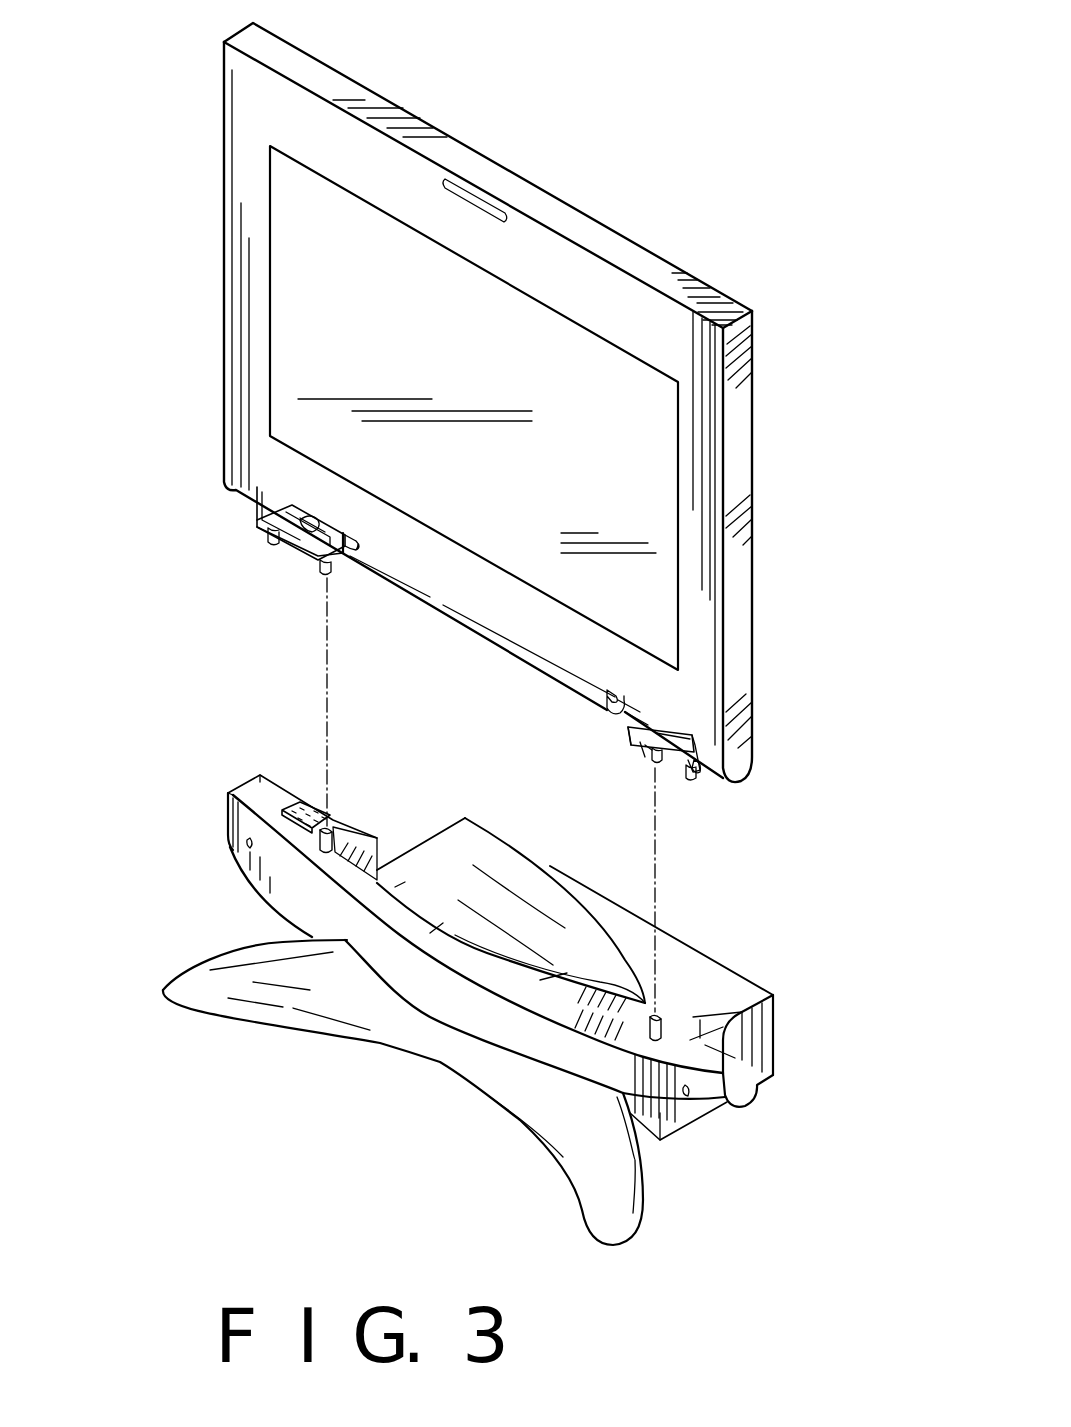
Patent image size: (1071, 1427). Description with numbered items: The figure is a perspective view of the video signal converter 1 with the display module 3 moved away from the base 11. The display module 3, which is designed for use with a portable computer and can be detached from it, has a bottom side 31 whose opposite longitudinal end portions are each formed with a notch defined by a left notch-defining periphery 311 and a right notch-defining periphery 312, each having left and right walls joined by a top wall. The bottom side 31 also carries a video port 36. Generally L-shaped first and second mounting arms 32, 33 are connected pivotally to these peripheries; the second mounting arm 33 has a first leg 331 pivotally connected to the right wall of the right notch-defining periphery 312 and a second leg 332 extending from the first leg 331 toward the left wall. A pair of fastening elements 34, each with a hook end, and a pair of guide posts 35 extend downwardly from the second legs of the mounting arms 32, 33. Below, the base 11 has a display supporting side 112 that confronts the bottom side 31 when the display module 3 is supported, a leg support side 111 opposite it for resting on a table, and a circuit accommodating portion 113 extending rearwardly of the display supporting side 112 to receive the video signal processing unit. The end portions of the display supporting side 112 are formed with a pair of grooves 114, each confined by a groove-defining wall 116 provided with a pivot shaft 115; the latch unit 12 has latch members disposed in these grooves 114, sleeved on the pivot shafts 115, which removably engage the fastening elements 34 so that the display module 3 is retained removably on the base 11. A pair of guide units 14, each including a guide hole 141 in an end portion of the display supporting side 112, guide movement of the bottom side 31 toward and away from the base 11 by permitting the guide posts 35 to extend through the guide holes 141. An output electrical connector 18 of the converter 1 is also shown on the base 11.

The video signal converter 1 is at (765, 1156).
The base 11 is at (457, 993).
The leg support side 111 is at (523, 1098).
The display supporting side 112 is at (410, 910).
The circuit accommodating portion 113 is at (772, 1003).
The grooves 114 is at (740, 1052).
The pivot shaft 115 is at (246, 841).
The groove-defining wall 116 is at (748, 1068).
The latch unit 12 is at (250, 792).
The guide units 14 is at (362, 823).
The guide hole 141 is at (333, 830).
The output electrical connector 18 is at (300, 793).
The display module 3 is at (624, 190).
The bottom side 31 is at (435, 612).
The left notch-defining periphery 311 is at (298, 500).
The right notch-defining periphery 312 is at (670, 717).
The first mounting arm 32 is at (303, 552).
The second mounting arm 33 is at (628, 737).
The first leg 331 is at (702, 770).
The second leg 332 is at (656, 757).
The fastening elements 34 is at (265, 538).
The guide posts 35 is at (324, 573).
The video port 36 is at (285, 558).